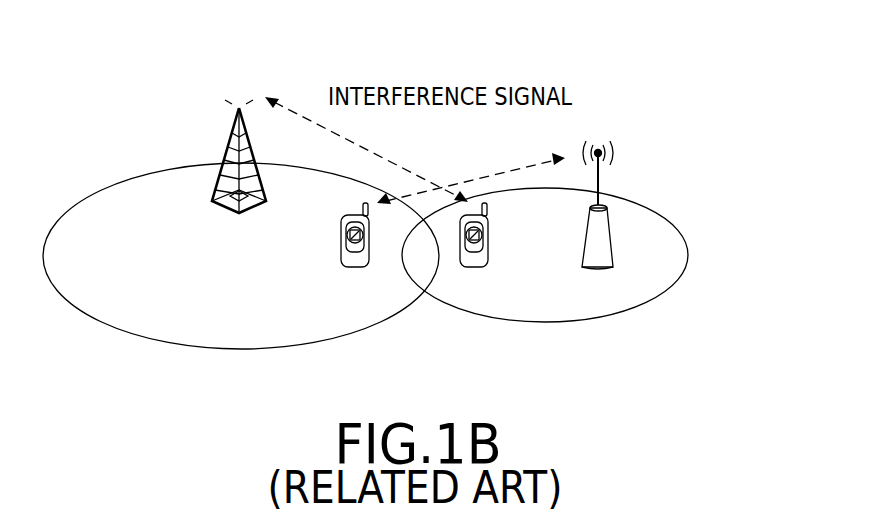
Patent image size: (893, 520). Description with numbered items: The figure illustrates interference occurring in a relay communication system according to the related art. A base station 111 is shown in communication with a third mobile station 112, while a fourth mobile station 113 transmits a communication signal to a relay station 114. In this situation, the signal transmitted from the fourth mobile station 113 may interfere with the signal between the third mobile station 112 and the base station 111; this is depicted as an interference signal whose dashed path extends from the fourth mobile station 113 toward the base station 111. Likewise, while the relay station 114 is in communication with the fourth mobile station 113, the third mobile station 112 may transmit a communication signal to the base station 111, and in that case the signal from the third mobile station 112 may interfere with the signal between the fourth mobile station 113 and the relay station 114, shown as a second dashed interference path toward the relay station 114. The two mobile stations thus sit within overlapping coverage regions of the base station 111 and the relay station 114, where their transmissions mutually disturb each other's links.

The BS 111 is at (239, 100).
The MS3 112 is at (341, 256).
The MS4 113 is at (489, 239).
The RS 114 is at (617, 150).